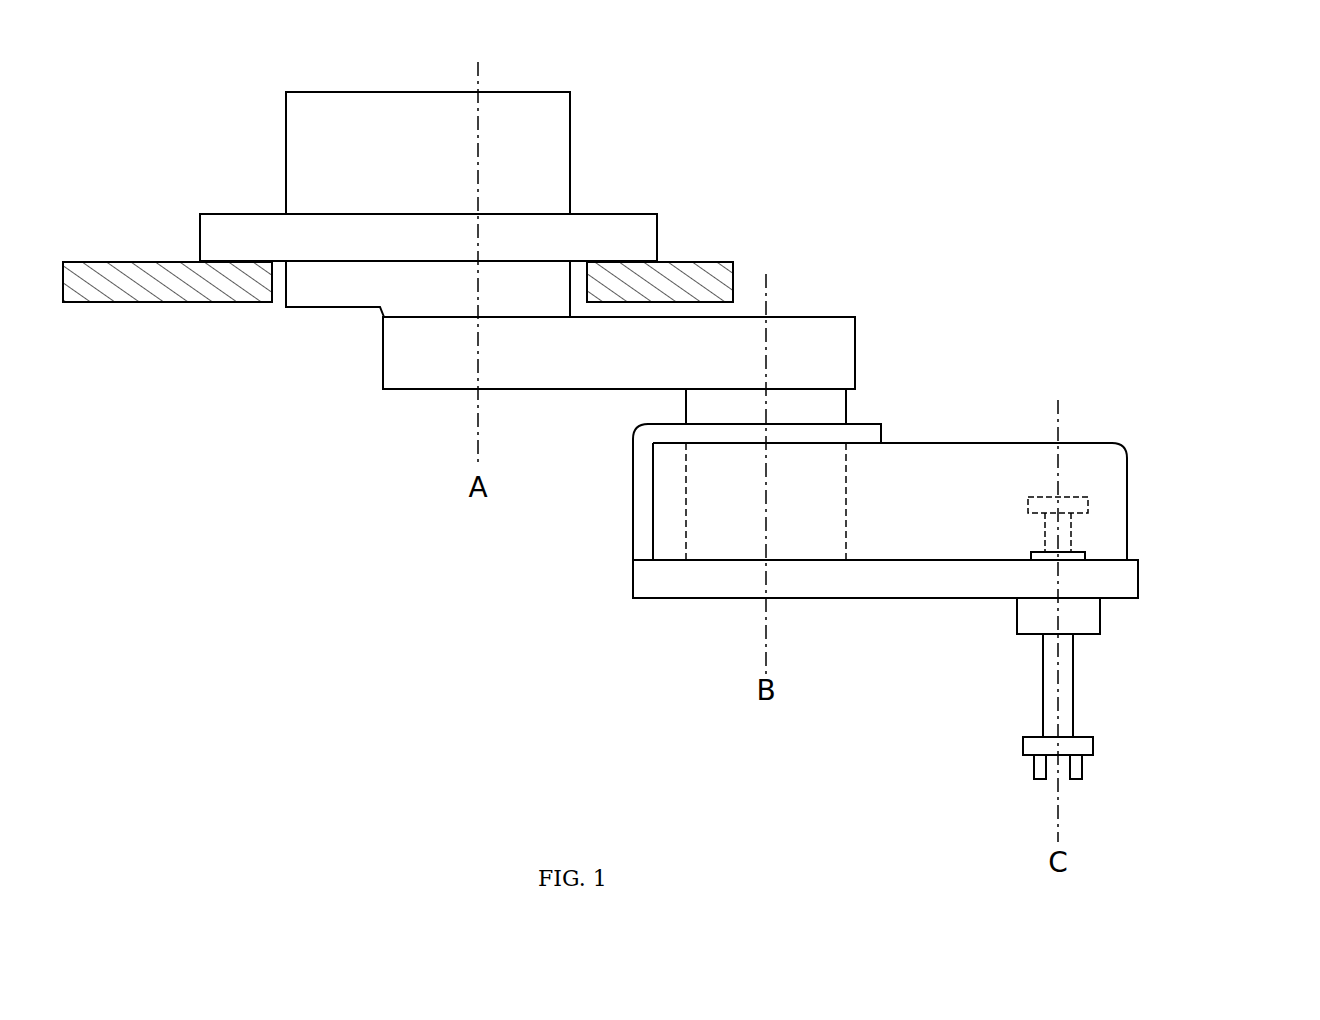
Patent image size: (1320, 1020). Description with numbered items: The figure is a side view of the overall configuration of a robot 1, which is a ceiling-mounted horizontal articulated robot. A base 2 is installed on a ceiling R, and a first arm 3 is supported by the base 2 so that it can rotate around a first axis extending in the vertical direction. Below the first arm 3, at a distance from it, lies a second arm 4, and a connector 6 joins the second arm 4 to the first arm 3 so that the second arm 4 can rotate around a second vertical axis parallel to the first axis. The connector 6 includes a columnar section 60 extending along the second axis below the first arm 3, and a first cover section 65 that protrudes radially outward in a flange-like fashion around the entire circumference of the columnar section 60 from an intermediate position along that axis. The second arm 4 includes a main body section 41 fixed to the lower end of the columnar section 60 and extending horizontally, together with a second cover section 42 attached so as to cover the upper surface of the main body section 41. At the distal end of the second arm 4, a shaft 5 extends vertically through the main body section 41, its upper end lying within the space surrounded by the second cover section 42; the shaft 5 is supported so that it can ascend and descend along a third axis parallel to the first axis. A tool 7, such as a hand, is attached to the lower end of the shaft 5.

The robot 1 is at (747, 172).
The ceiling R is at (112, 262).
The base 2 is at (286, 148).
The first arm 3 is at (383, 352).
The connector 6 is at (831, 369).
The columnar section 60 is at (846, 402).
The first cover section 65 is at (809, 420).
The second arm 4 is at (954, 514).
The second cover section 42 is at (1127, 486).
The main body section 41 is at (934, 579).
The shaft 5 is at (1073, 681).
The tool 7 is at (1093, 740).